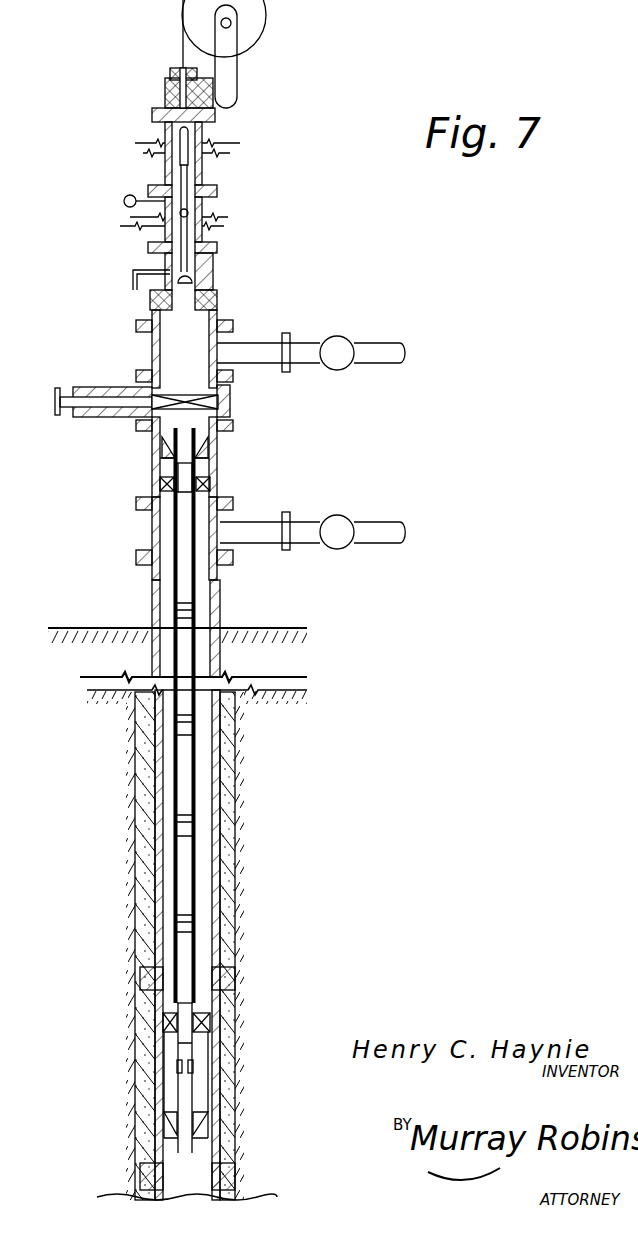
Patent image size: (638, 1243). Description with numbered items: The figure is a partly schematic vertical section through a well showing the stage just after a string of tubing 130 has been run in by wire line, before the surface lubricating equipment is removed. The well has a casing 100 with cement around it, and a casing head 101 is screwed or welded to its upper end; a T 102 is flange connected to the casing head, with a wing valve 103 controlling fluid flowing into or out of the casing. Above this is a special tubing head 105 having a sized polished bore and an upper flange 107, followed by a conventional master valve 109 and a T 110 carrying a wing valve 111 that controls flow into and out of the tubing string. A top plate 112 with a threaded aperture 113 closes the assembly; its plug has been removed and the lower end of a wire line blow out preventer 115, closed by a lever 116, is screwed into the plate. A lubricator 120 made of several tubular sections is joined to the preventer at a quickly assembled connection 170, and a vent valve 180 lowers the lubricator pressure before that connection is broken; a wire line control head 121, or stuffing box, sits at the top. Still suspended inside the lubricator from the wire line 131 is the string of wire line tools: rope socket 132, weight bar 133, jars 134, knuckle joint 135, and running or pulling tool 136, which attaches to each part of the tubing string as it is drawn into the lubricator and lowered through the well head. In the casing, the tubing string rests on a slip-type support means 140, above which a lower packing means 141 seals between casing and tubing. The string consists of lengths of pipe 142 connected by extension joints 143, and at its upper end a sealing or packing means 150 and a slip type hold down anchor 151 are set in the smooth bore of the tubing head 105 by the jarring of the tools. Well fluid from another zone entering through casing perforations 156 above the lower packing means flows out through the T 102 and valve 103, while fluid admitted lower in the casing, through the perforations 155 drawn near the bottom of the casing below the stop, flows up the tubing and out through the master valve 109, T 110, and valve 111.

The casing 100 is at (233, 955).
The casing head 101 is at (221, 583).
The T 102 is at (152, 530).
The wing valve 103 is at (337, 515).
The special tubing head 105 is at (232, 457).
The upper flange 107 is at (136, 432).
The master valve 109 is at (230, 405).
The T 110 is at (152, 340).
The wing valve 111 is at (337, 336).
The top plate 112 is at (218, 300).
The threaded aperture 113 is at (150, 300).
The wire line blow out preventer 115 is at (213, 272).
The lever 116 is at (133, 275).
The lubricator 120 is at (163, 232).
The wire line control head 121 is at (170, 88).
The tubing string 130 is at (172, 788).
The wire line 131 is at (183, 58).
The rope socket 132 is at (205, 138).
The weight bar 133 is at (190, 158).
The jars 134 is at (217, 190).
The knuckle joint 135 is at (189, 213).
The running or pulling tool 136 is at (202, 240).
The support means 140 is at (178, 1090).
The lower packing means 141 is at (167, 1022).
The length of pipe 142 is at (196, 660).
The extension joint 143 is at (178, 607).
The sealing or packing means 150 is at (215, 484).
The slip type hold down anchor 151 is at (220, 440).
The casing collar 155 is at (145, 1190).
The casing perforations 156 is at (145, 985).
The connection 170 is at (217, 248).
The vent valve 180 is at (124, 201).